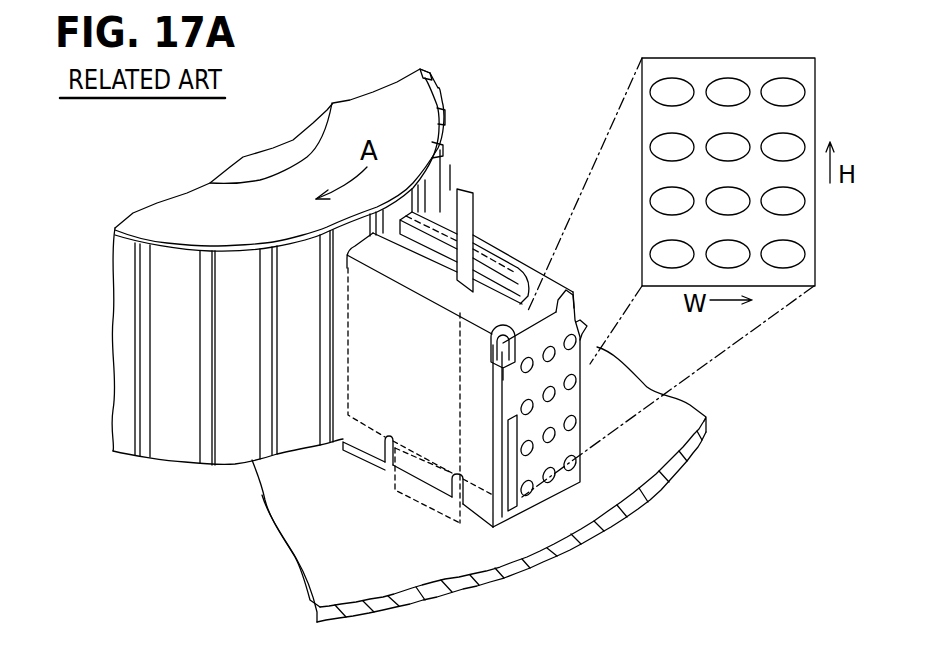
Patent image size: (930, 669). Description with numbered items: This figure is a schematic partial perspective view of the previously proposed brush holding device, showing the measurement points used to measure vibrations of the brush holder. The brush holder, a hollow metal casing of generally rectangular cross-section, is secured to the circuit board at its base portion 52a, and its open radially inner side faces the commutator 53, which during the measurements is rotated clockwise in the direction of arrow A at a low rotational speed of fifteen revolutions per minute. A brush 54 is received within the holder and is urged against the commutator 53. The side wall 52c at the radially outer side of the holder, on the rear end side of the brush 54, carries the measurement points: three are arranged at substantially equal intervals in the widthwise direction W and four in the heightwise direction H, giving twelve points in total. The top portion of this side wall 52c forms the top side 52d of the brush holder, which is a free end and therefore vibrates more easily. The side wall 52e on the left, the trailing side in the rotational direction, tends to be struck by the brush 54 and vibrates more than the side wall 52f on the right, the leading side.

The base portion 52a is at (357, 455).
The side wall 52c is at (560, 483).
The top side 52d is at (430, 286).
The side wall 52e is at (430, 438).
The side wall 52f is at (578, 297).
The commutator 53 is at (125, 317).
The brush 54 is at (498, 256).